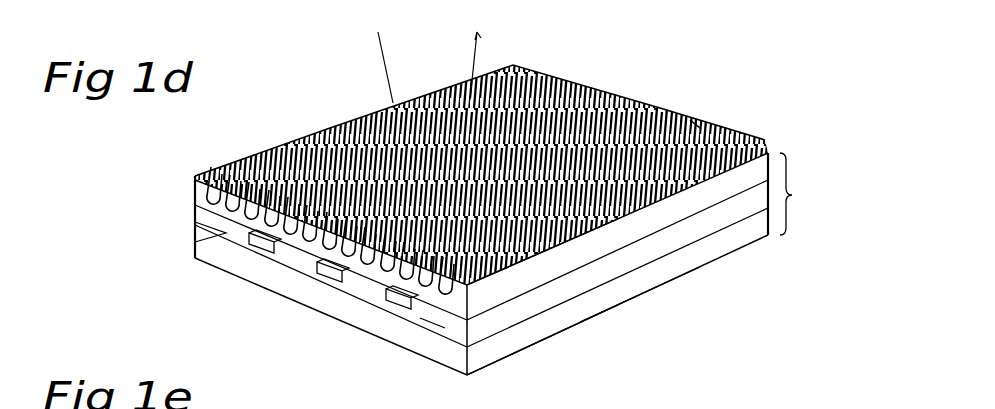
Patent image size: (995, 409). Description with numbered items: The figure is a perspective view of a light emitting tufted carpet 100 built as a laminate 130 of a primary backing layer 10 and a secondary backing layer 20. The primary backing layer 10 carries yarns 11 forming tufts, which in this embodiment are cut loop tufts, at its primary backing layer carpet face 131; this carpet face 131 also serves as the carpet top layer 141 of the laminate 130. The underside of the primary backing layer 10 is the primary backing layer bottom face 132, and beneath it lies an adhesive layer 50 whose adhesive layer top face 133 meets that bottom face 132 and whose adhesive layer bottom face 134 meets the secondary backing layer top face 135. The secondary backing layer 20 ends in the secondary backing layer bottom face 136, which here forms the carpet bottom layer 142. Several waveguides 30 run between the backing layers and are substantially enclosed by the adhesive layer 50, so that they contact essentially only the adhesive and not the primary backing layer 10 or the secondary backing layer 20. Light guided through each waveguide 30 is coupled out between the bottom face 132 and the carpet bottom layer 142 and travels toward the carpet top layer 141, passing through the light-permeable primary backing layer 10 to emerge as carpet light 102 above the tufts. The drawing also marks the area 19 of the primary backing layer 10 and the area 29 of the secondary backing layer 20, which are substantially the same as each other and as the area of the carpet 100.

The light emitting tufted carpet 100 is at (195, 163).
The primary backing layer 10 is at (748, 180).
The yarns 11 is at (200, 193).
The area of the primary backing layer 19 is at (358, 122).
The secondary backing layer 20 is at (680, 263).
The area of the secondary backing layer 29 is at (225, 235).
The waveguide 30 is at (233, 247).
The adhesive layer 50 is at (610, 267).
The carpet light 102 is at (472, 52).
The laminate 130 is at (801, 194).
The primary backing layer carpet face 131 is at (693, 126).
The primary backing layer bottom face 132 is at (507, 267).
The adhesive layer top face 133 is at (282, 250).
The adhesive layer bottom face 134 is at (432, 321).
The secondary backing layer top face 135 is at (368, 308).
The secondary backing layer bottom face 136 is at (547, 340).
The carpet top layer 141 is at (707, 182).
The carpet bottom layer 142 is at (600, 315).